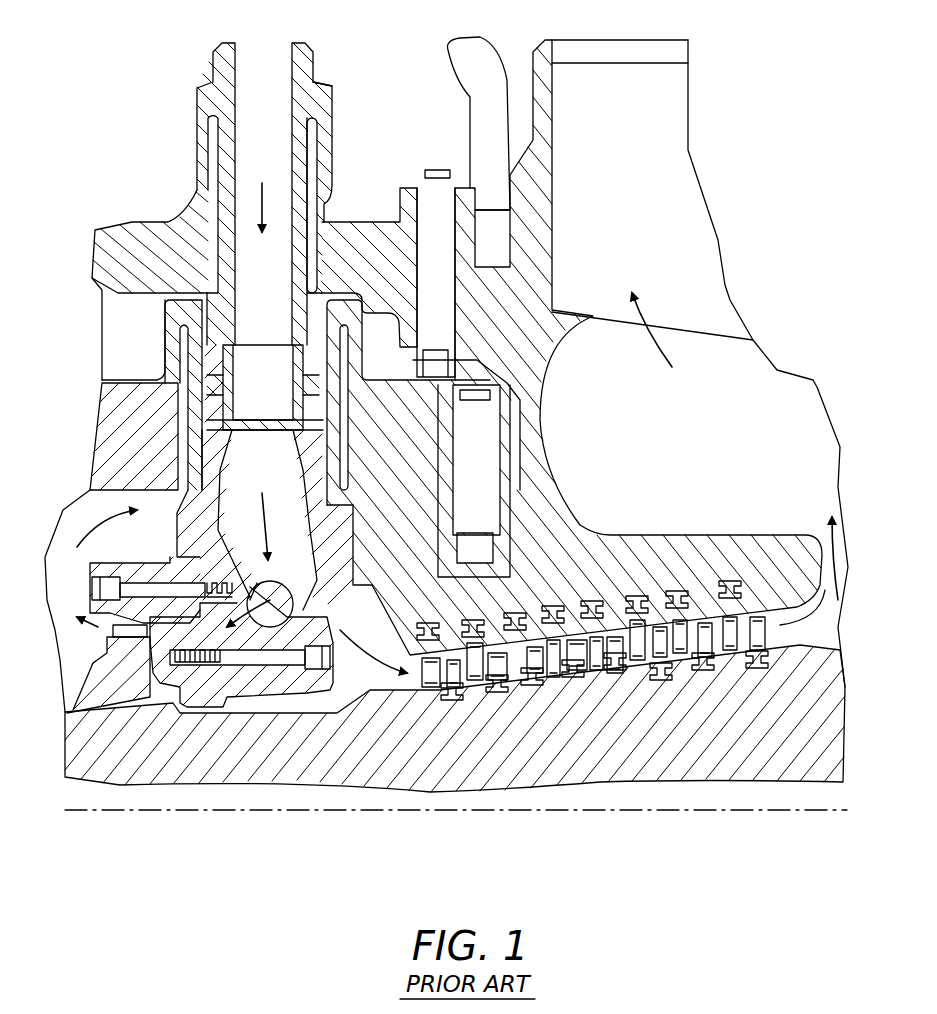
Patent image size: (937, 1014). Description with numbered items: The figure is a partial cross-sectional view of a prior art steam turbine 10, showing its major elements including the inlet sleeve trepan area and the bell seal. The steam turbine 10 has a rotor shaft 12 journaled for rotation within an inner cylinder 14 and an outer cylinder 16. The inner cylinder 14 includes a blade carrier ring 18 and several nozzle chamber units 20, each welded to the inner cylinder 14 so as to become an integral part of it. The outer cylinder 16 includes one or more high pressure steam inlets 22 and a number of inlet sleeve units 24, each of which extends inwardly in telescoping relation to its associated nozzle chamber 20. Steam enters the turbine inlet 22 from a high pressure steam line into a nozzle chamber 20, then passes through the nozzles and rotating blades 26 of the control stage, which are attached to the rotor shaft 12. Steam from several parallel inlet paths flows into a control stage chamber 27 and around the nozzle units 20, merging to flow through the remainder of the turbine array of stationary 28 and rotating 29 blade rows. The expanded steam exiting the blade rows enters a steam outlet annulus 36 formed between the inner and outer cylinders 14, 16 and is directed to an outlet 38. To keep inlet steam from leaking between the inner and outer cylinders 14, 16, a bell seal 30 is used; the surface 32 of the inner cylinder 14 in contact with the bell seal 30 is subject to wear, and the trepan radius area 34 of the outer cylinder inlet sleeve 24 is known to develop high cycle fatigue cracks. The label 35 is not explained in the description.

The steam turbine 10 is at (150, 92).
The rotor shaft 12 is at (847, 710).
The inner cylinder 14 is at (147, 363).
The outer cylinder 16 is at (185, 203).
The blade carrier ring 18 is at (567, 510).
The nozzle chamber unit 20 is at (170, 460).
The high pressure steam inlet 22 is at (274, 107).
The inlet sleeve unit 24 is at (313, 217).
The rotating blades 26 is at (123, 638).
The control stage chamber 27 is at (82, 602).
The stationary blade rows 28 is at (637, 640).
The rotating blade rows 29 is at (660, 660).
The bell seal 30 is at (250, 390).
The surface of the inner cylinder 32 is at (210, 420).
The trepan radius area 34 is at (318, 116).
The slot 35 is at (312, 140).
The steam outlet annulus 36 is at (715, 458).
The outlet 38 is at (647, 207).